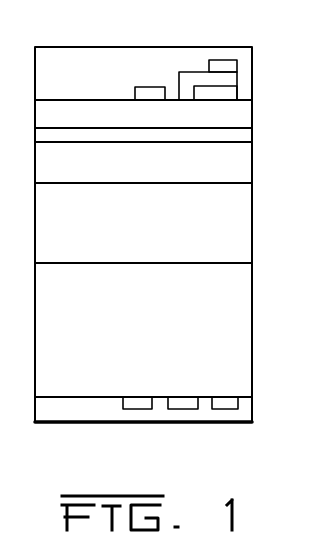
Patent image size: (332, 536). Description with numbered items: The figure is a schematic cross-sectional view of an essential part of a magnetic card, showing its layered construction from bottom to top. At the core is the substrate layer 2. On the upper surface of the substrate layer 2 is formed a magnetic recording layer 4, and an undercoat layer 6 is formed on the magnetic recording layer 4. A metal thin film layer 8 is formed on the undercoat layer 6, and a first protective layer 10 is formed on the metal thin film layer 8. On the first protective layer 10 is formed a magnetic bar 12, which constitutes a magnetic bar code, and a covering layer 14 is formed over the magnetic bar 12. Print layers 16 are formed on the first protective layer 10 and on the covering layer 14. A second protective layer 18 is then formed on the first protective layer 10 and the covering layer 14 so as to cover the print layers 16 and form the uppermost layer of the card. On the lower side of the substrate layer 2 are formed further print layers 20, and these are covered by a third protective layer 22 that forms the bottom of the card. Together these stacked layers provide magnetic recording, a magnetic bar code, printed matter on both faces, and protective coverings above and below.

The substrate layer 2 is at (241, 328).
The magnetic recording layer 4 is at (240, 222).
The undercoat layer 6 is at (240, 167).
The metal thin film layer 8 is at (244, 133).
The first protective layer 10 is at (243, 114).
The magnetic bar 12 is at (228, 92).
The covering layer 14 is at (230, 79).
The print layers 16 is at (148, 92).
The second protective layer 18 is at (242, 53).
The print layers 20 is at (230, 404).
The third protective layer 22 is at (245, 414).